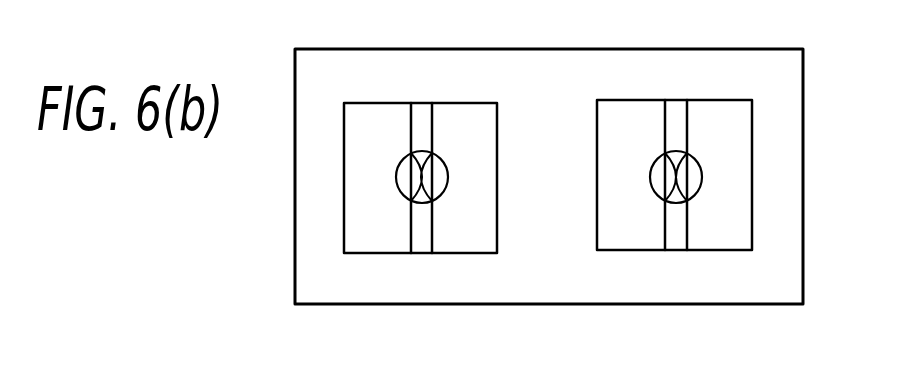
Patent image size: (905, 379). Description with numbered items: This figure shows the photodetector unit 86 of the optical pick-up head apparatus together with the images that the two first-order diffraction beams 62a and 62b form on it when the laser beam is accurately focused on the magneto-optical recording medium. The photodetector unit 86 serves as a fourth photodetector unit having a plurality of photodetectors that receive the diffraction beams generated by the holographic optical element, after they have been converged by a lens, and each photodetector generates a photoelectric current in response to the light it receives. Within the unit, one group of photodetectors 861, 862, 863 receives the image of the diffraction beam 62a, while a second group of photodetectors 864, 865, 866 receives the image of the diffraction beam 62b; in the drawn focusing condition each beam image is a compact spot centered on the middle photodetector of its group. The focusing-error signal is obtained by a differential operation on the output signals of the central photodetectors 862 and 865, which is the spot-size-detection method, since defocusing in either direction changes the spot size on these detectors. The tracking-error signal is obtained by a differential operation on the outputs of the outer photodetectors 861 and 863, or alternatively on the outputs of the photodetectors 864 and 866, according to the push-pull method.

The photodetector unit 86 is at (803, 123).
The diffraction beam 62a is at (403, 153).
The diffraction beam 62b is at (695, 153).
The photodetector 861 is at (373, 254).
The photodetector 862 is at (418, 254).
The photodetector 863 is at (464, 254).
The photodetector 864 is at (629, 251).
The photodetector 865 is at (673, 251).
The photodetector 866 is at (725, 251).